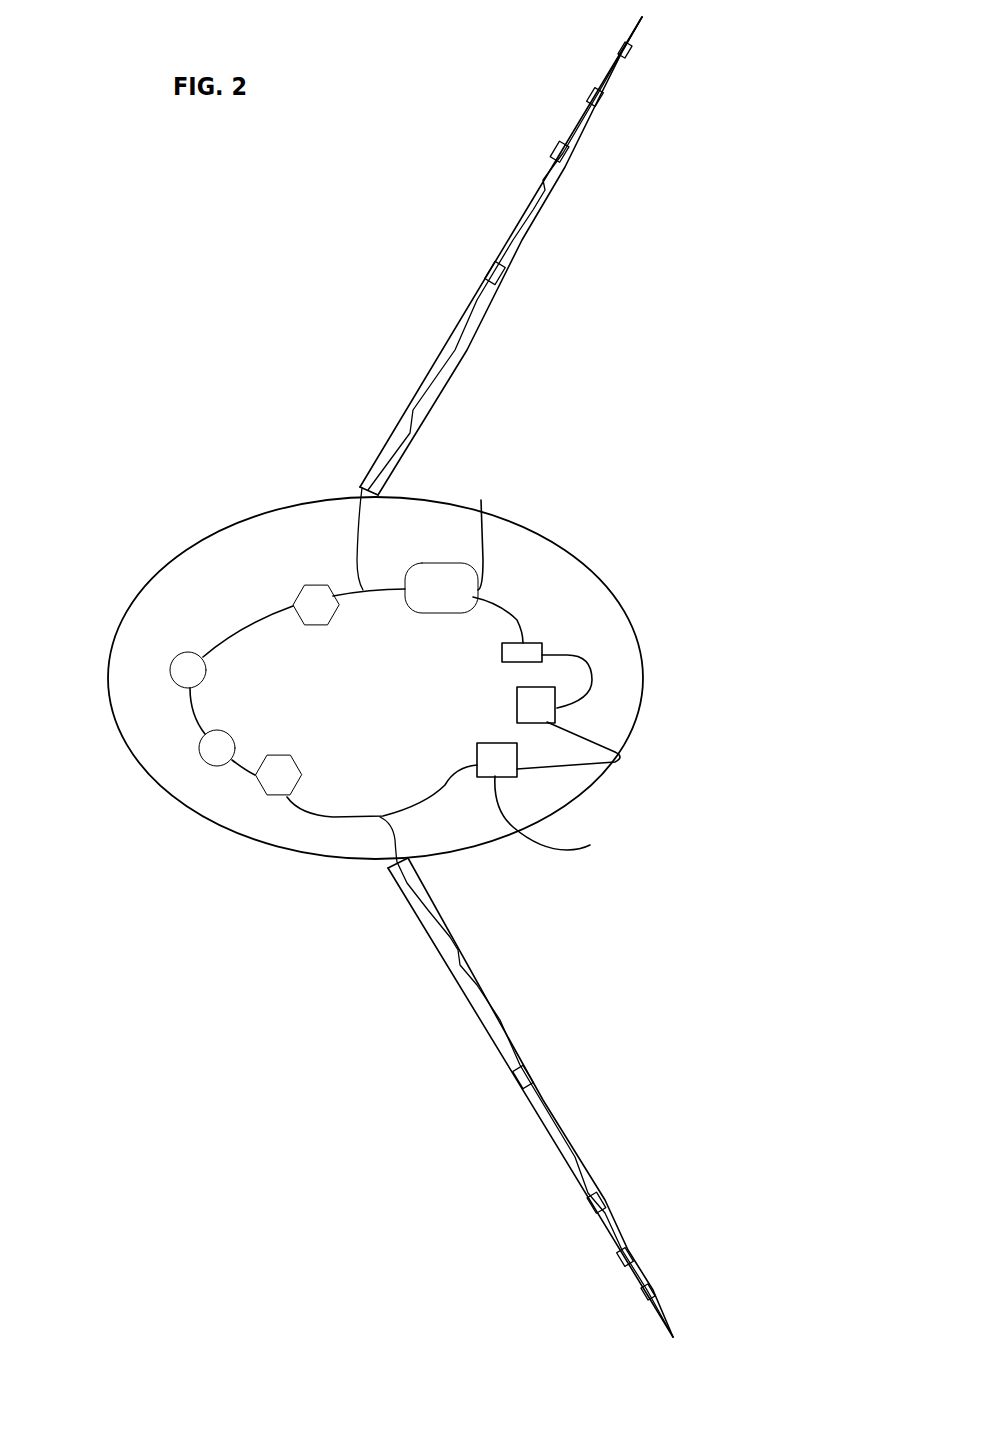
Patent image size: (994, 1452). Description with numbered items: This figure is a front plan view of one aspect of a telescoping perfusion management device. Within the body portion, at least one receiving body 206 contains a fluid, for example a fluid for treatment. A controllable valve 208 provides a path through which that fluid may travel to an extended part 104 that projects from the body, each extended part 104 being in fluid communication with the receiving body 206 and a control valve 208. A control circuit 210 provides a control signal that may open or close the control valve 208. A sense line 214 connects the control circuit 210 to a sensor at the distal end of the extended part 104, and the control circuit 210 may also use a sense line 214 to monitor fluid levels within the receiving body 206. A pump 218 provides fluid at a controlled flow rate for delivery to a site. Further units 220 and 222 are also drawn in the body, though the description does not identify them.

The extended part 104 is at (473, 333).
The sense line 214 is at (413, 410).
The control circuit 210 is at (481, 500).
The controllable valve 208 is at (303, 582).
The receiving body 206 is at (188, 670).
The pump 218 is at (527, 650).
The controller 220 is at (550, 708).
The power source 222 is at (571, 796).